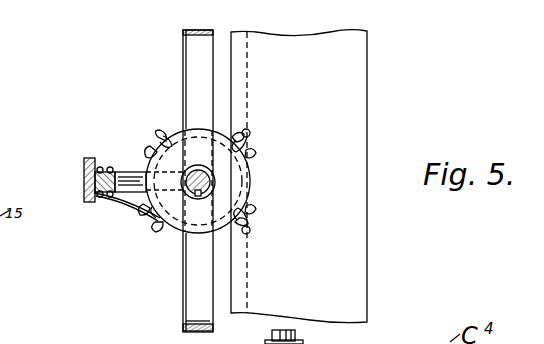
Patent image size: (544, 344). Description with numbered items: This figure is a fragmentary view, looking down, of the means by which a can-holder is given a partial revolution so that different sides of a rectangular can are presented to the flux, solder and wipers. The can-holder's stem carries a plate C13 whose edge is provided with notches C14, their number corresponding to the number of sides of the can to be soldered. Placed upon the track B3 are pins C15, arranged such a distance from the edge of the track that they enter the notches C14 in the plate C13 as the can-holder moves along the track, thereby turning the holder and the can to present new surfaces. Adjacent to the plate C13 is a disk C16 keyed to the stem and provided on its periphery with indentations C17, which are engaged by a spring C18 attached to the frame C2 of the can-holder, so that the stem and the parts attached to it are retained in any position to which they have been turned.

The rectangular frame C2 is at (83, 178).
The plate C13 is at (147, 149).
The notches C14 is at (123, 245).
The pins C15 is at (250, 131).
The disk C16 is at (202, 207).
The indentations C17 is at (298, 205).
The spring C18 is at (130, 200).
The track B3 is at (299, 176).